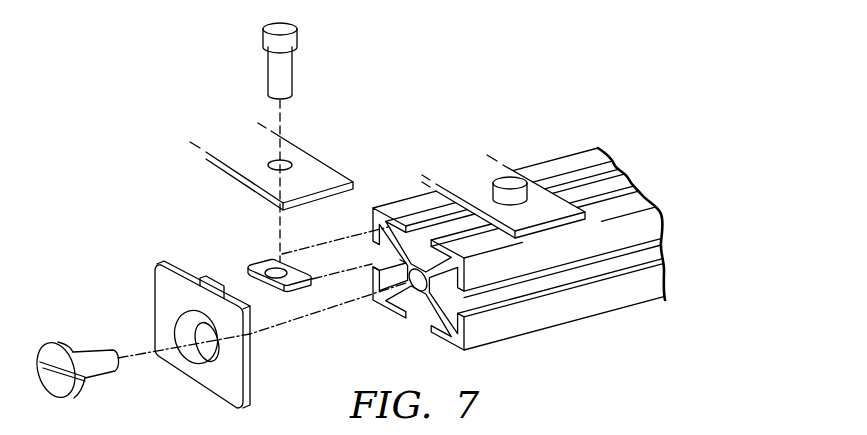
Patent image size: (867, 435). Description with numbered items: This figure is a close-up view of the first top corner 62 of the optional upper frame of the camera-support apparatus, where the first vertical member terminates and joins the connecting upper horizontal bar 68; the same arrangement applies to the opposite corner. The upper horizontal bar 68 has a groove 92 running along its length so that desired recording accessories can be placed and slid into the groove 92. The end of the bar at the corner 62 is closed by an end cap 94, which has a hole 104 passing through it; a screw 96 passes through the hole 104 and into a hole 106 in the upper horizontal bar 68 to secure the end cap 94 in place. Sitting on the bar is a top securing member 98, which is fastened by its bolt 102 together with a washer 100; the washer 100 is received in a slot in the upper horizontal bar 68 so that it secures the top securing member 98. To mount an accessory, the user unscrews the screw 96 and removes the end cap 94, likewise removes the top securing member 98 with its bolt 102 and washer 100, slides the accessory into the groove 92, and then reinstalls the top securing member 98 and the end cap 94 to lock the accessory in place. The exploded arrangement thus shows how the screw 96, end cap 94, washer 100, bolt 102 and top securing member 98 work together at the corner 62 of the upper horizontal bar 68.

The first top corner of optional upper frame 62 is at (132, 190).
The upper horizontal bar 68 is at (589, 312).
The groove 92 is at (446, 218).
The end cap 94 is at (178, 262).
The screw in end cap 96 is at (92, 350).
The top securing member 98 is at (334, 176).
The washer for base for accessories 100 is at (258, 263).
The bolt for base for accessories 102 is at (288, 66).
The hole in end cap 104 is at (217, 362).
The hole in upper horizontal bar 106 is at (412, 288).